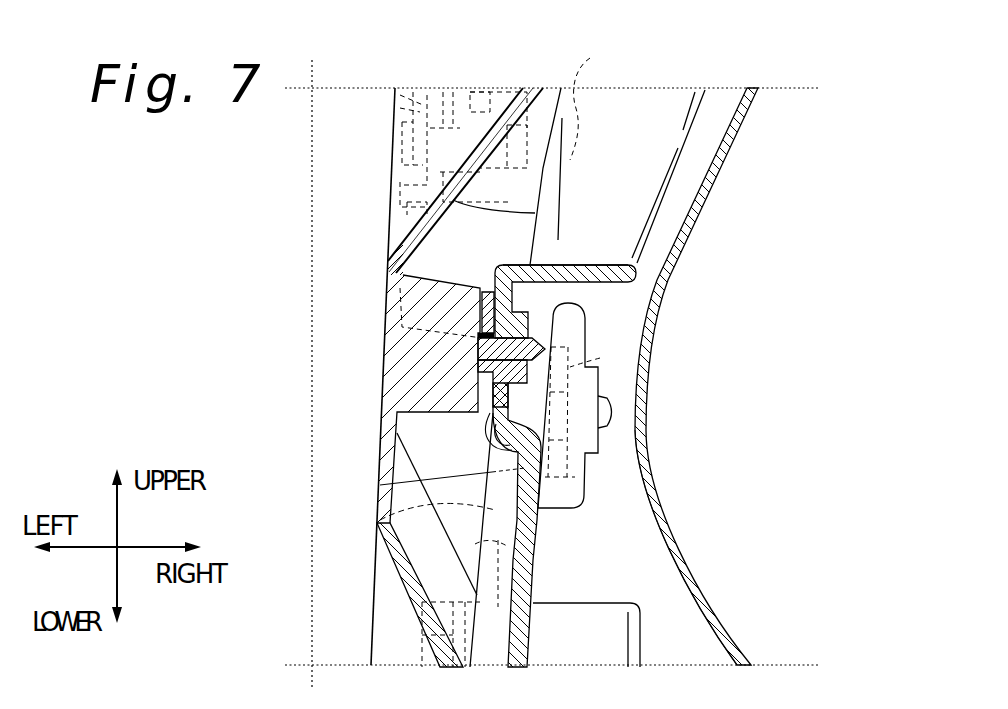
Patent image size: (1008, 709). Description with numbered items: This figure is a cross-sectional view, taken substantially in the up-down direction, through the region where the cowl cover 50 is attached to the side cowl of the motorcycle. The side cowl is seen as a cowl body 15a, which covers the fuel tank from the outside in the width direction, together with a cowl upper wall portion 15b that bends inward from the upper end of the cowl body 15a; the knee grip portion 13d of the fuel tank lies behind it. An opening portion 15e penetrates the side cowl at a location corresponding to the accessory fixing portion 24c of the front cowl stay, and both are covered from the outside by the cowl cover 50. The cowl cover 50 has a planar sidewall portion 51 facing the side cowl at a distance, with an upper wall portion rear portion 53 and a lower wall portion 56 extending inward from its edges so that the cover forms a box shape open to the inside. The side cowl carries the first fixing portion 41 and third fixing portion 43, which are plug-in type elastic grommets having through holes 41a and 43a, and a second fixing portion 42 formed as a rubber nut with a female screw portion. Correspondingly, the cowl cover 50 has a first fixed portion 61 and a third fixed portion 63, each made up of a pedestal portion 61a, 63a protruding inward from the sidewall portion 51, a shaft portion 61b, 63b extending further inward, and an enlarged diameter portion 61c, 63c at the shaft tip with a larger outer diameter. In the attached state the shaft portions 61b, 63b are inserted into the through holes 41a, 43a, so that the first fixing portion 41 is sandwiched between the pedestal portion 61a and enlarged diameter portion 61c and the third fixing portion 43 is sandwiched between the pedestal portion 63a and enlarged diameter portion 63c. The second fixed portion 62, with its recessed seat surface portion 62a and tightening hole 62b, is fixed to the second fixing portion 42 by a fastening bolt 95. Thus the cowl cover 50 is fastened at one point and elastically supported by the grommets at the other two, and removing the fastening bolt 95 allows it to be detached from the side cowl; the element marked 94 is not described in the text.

The knee grip portion 13d is at (615, 423).
The cowl body 15a is at (380, 520).
The cowl upper wall portion 15b is at (643, 135).
The opening portion 15e is at (535, 577).
The accessory fixing portion 24c is at (612, 654).
The first fixing portion 41 is at (593, 453).
The through hole 41a is at (556, 355).
The second fixing portion 42 is at (596, 98).
The third fixing portion 43 is at (491, 284).
The through hole 43a is at (588, 252).
The cowl cover 50 is at (377, 256).
The sidewall portion 51 is at (380, 485).
The upper wall portion rear portion 53 is at (500, 97).
The lower wall portion 56 is at (387, 562).
The first fixed portion 61 is at (647, 430).
The pedestal portion 61a is at (466, 454).
The shaft portion 61b is at (600, 358).
The enlarged diameter portion 61c is at (608, 398).
The second fixed portion 62 is at (393, 92).
The seat surface portion 62a is at (400, 182).
The tightening hole 62b is at (447, 92).
The third fixed portion 63 is at (377, 299).
The pedestal portion 63a is at (435, 372).
The shaft portion 63b is at (478, 344).
The enlarged diameter portion 63c is at (527, 330).
The hidden lower component 94 is at (420, 653).
The fastening bolt 95 is at (393, 137).